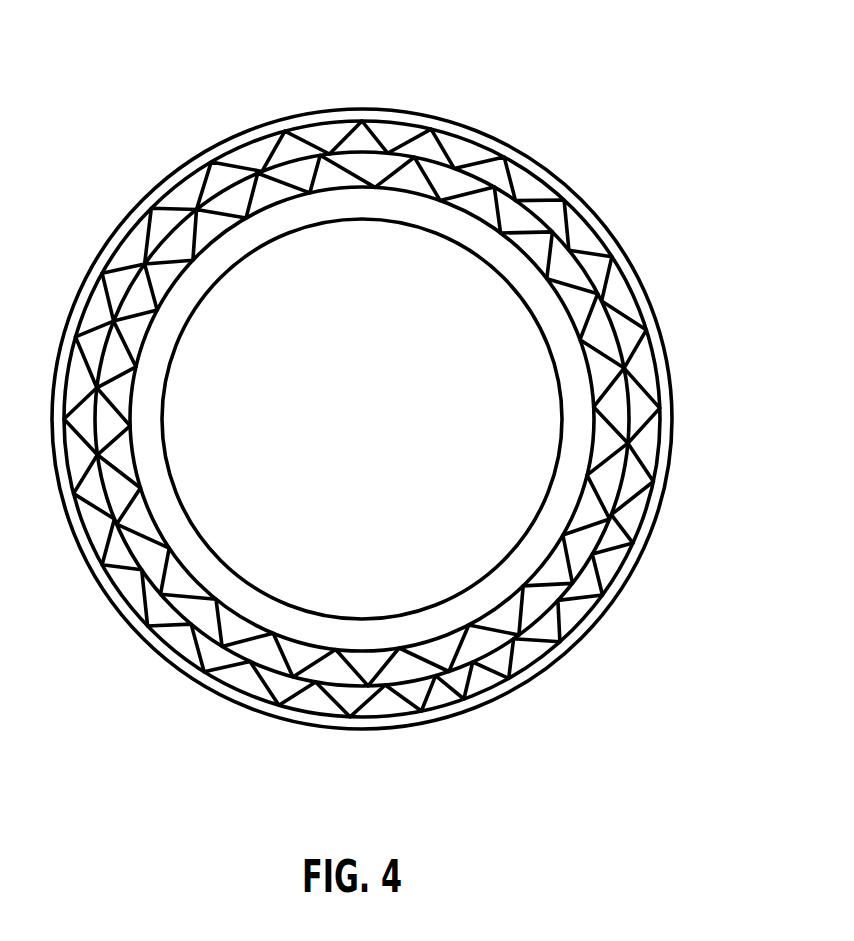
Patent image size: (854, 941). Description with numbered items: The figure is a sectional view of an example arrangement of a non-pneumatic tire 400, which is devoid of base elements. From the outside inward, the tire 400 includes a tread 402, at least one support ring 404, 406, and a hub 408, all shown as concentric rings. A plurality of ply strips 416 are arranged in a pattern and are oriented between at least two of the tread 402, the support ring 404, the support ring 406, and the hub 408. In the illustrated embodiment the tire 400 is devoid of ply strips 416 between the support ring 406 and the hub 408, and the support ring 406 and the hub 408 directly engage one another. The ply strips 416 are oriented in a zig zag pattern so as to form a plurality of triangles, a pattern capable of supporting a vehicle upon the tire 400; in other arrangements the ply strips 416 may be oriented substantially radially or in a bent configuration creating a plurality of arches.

The non-pneumatic tire 400 is at (138, 99).
The tread 402 is at (446, 112).
The support ring 404 is at (588, 273).
The support ring 406 is at (530, 258).
The hub 408 is at (362, 222).
The ply strip 416 is at (603, 420).